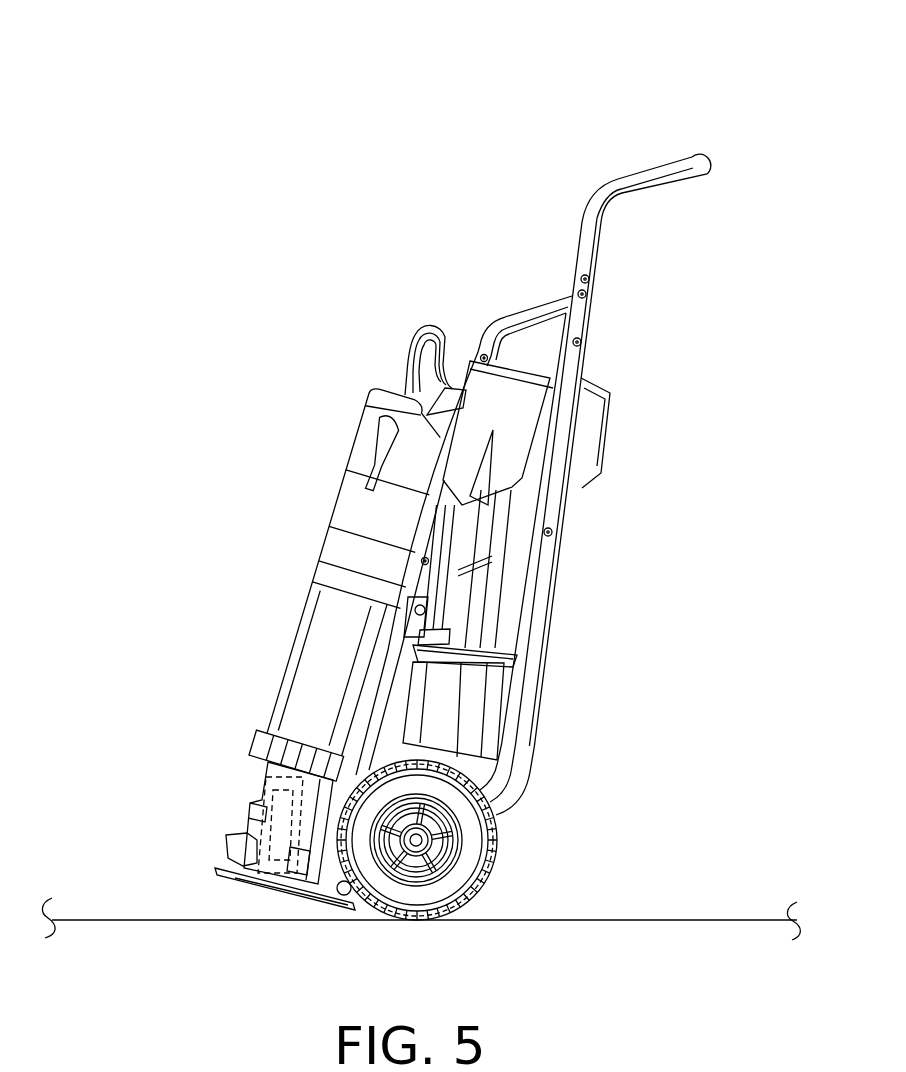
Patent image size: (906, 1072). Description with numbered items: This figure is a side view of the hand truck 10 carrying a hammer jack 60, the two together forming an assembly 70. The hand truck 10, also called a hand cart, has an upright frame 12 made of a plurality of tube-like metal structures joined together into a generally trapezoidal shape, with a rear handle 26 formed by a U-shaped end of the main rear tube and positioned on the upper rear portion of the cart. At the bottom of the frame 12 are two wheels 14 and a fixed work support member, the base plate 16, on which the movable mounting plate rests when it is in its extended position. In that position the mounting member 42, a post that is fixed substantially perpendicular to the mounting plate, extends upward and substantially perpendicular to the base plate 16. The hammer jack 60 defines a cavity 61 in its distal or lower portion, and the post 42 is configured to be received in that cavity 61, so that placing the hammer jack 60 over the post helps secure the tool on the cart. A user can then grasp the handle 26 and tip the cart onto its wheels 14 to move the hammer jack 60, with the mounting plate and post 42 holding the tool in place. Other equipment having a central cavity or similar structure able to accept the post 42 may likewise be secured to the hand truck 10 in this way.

The hand truck 10 is at (702, 133).
The upright frame 12 is at (553, 491).
The wheels 14 is at (496, 866).
The base plate 16 is at (243, 868).
The rear handle 26 is at (708, 165).
The mounting member 42 is at (265, 862).
The hammer jack 60 is at (315, 643).
The cavity 61 is at (278, 822).
The assembly 70 is at (634, 116).